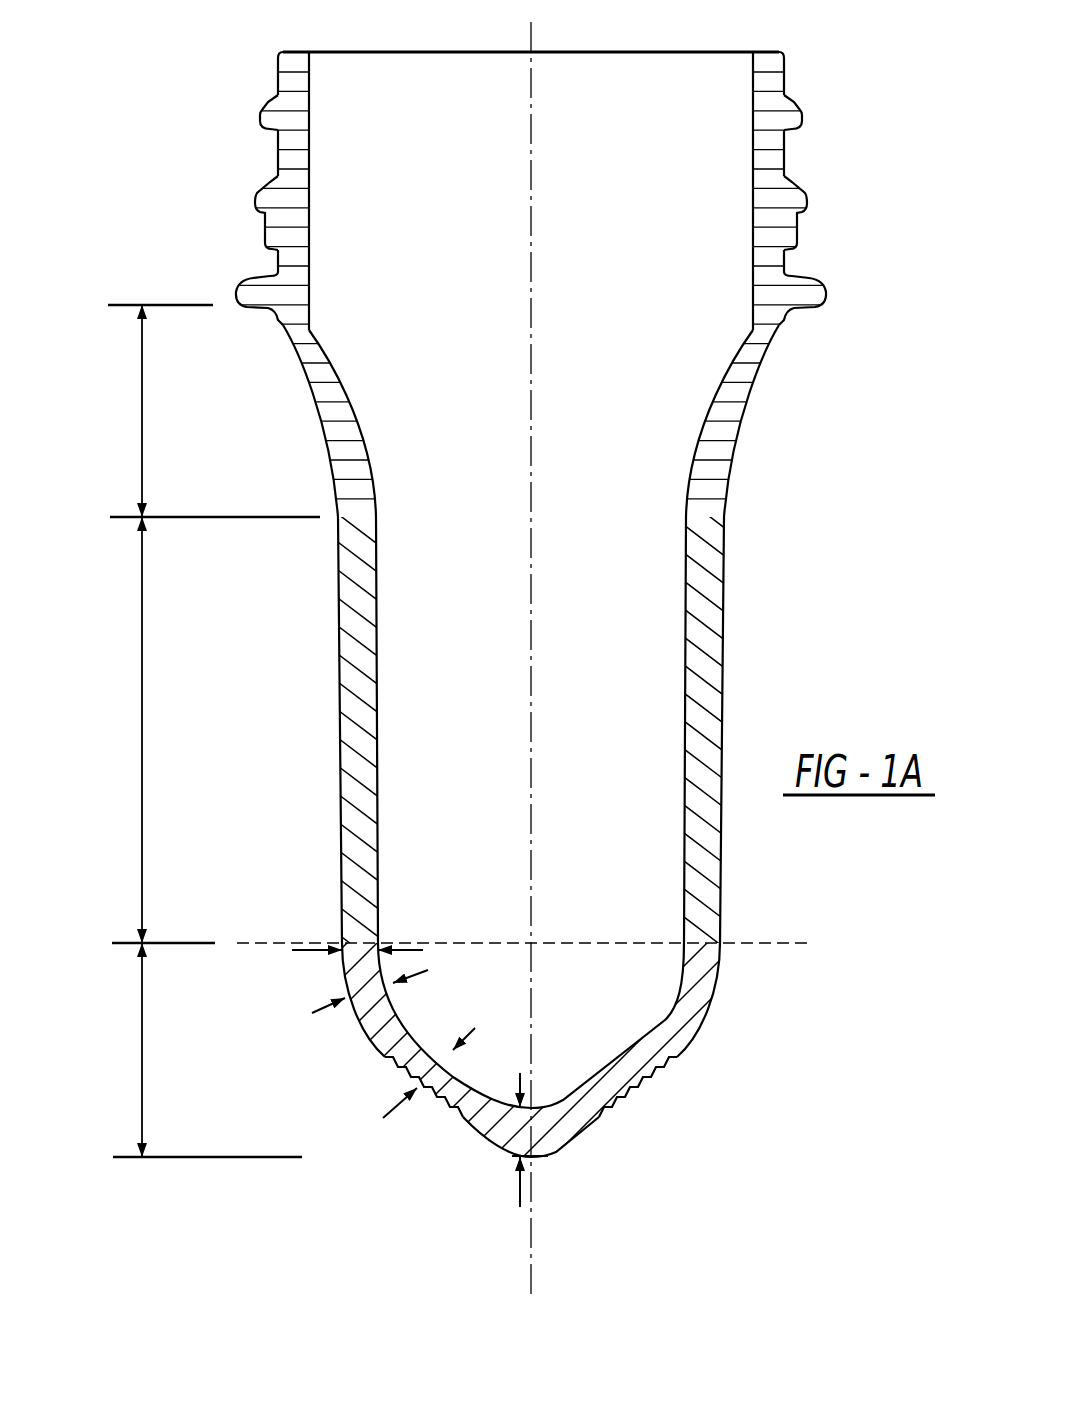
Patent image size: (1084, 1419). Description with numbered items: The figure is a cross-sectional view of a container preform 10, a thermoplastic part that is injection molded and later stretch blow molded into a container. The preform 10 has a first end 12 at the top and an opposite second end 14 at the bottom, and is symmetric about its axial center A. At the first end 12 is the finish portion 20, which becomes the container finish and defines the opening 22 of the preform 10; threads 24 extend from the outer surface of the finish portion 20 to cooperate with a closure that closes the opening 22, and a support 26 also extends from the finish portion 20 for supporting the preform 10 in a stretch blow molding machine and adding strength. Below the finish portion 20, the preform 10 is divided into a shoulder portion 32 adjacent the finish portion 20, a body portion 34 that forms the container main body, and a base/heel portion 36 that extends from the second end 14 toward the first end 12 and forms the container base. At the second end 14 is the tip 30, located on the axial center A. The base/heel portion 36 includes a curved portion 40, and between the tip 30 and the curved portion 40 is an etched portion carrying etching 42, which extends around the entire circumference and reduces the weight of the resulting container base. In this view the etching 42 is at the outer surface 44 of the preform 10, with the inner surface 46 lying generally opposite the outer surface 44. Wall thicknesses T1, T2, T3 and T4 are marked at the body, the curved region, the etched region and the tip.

The preform 10 is at (150, 121).
The first end 12 is at (295, 50).
The second end 14 is at (553, 1153).
The finish portion 20 is at (277, 161).
The opening 22 is at (752, 78).
The threads 24 is at (800, 117).
The support 26 is at (825, 290).
The tip 30 is at (540, 1157).
The shoulder portion 32 is at (140, 452).
The body portion 34 is at (140, 747).
The base/heel portion 36 is at (140, 1067).
The curved portion 40 is at (352, 1015).
The etching 42 is at (395, 1069).
The outer surface 44 is at (467, 1137).
The inner surface 46 is at (492, 1098).
The axial center A is at (531, 35).
The body wall thickness T1 is at (347, 966).
The transition wall thickness T2 is at (357, 1006).
The base wall thickness T3 is at (418, 1092).
The gate thickness T4 is at (515, 1162).